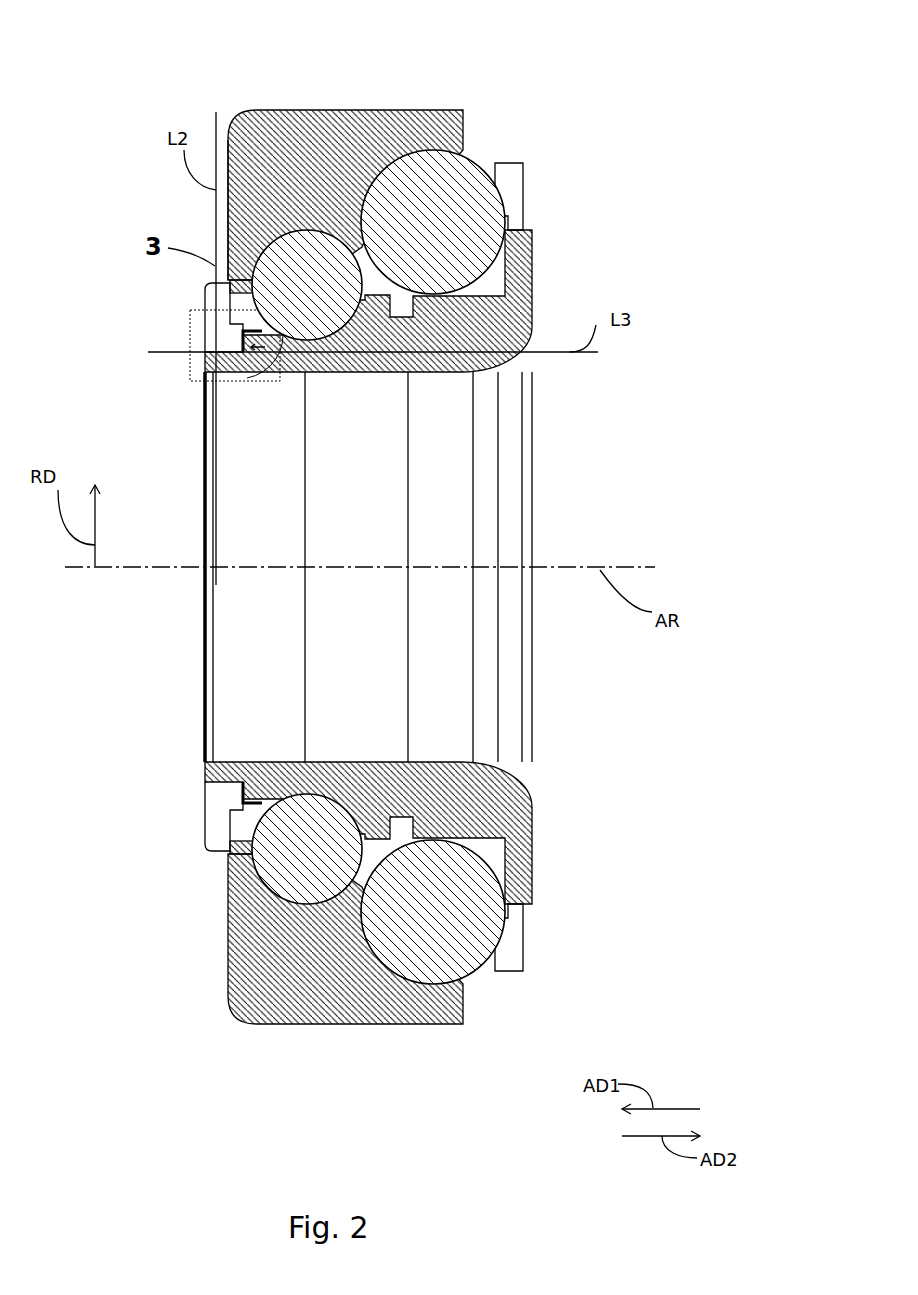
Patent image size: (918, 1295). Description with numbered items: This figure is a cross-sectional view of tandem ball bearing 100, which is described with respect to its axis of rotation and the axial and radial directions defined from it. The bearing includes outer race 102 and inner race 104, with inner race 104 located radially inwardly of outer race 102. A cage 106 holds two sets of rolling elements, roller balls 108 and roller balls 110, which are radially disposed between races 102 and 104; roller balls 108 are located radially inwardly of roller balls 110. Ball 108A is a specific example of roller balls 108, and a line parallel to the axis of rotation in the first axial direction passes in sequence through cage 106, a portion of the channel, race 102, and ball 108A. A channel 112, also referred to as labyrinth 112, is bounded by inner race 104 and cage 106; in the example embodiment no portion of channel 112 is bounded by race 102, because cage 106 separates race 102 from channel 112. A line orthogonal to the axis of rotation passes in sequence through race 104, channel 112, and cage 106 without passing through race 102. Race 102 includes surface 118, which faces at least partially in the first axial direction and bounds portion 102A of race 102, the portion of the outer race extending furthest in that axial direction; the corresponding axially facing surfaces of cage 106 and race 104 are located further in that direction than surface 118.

The tandem ball bearing 100 is at (394, 517).
The outer race 102 is at (294, 517).
The portion of race 102 extending furthest in axial direction AD1 102A is at (237, 165).
The inner race 104 is at (544, 298).
The cage 106 is at (196, 567).
The roller balls 108 is at (307, 849).
The ball 108A is at (307, 285).
The roller balls 110 is at (433, 567).
The channel 112 is at (191, 326).
The surface 118 is at (232, 280).